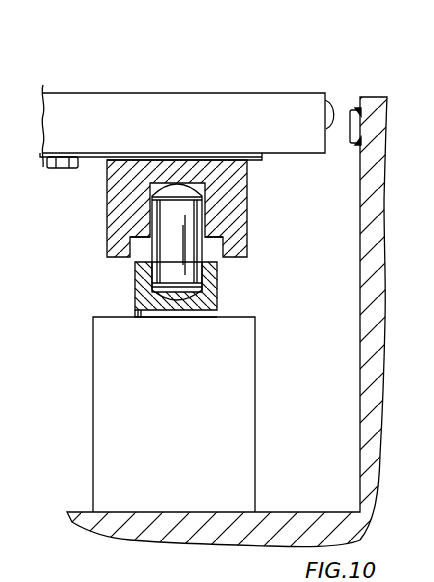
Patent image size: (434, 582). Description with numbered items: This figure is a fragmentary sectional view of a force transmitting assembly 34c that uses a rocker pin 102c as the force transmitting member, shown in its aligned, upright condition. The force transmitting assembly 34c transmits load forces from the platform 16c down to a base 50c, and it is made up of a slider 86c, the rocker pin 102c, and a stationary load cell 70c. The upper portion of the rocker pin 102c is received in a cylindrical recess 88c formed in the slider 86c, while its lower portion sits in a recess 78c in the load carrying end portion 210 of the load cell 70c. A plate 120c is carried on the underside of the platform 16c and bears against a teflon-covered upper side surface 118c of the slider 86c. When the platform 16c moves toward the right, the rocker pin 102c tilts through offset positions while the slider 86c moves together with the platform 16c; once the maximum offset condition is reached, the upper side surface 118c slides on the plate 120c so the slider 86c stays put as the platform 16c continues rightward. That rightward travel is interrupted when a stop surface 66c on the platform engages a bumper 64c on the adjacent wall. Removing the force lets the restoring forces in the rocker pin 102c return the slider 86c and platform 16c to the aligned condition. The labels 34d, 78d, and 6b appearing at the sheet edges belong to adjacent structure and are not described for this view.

The platform 16c is at (184, 92).
The stop surface 66c is at (332, 112).
The bumper 64c is at (352, 108).
The plate 120c is at (112, 135).
The teflon-covered upper side surface 118c is at (153, 163).
The cylindrical recess 88c is at (235, 186).
The slider 86c is at (99, 218).
The rocker pin 102c is at (140, 254).
The load carrying end portion 210 is at (135, 287).
The recess 78c is at (217, 295).
The force transmitting assembly 34c is at (141, 414).
The load cell 70c is at (82, 420).
The base 50c is at (283, 512).
The support 34d is at (62, 574).
The retainer block 78d is at (157, 578).
The member 6b is at (8, 273).